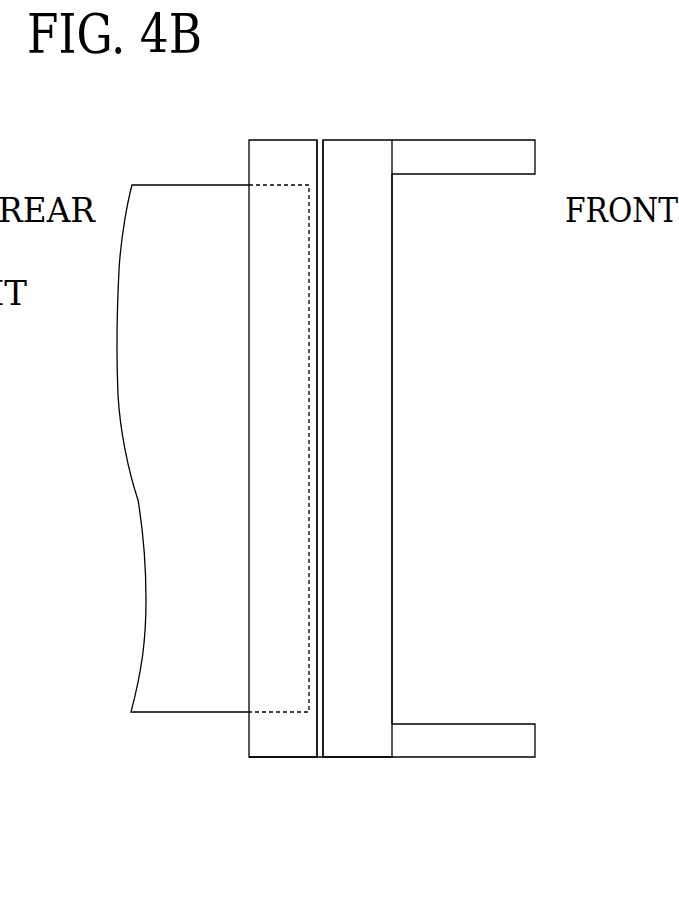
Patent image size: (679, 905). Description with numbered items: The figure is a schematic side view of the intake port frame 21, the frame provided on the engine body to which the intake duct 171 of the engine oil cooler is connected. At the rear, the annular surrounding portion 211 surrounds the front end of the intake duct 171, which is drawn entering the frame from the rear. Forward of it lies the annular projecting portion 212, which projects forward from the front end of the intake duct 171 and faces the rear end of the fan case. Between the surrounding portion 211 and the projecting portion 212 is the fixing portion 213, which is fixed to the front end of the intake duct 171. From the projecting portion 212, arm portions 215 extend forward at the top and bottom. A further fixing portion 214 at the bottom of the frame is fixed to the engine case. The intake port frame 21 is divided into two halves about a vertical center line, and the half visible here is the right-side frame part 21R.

The intake duct 171 is at (165, 185).
The intake port frame 21 is at (392, 432).
The surrounding portion 211 is at (268, 140).
The projecting portion 212 is at (345, 140).
The fixing portion 213 is at (323, 406).
The fixing portion 214 is at (355, 758).
The arm portion 215 is at (495, 175).
The right-side frame part 21R is at (382, 517).